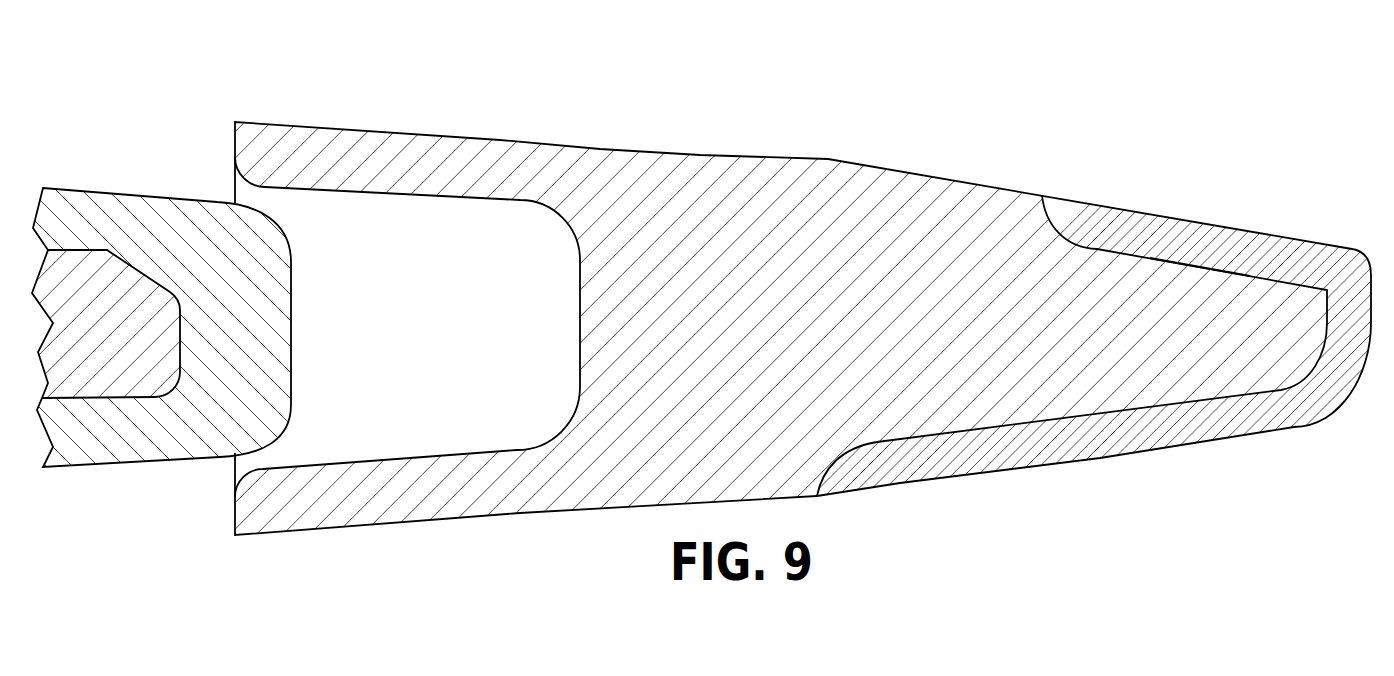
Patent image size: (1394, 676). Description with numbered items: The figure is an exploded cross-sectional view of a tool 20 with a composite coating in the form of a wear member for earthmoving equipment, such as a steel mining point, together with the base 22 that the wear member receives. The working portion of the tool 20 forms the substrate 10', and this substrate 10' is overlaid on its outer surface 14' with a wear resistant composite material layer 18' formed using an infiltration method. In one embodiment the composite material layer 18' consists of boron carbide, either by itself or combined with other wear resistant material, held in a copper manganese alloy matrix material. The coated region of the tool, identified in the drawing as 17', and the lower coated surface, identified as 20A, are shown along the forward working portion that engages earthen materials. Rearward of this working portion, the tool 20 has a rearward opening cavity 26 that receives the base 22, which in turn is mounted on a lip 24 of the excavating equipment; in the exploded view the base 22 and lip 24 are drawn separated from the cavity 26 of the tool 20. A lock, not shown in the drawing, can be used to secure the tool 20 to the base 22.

The tool 20 is at (899, 87).
The substrate 10' is at (697, 338).
The coating layer 17' is at (994, 338).
The wear resistant composite material layer 18' is at (1329, 249).
The outer surface 14' is at (1183, 278).
The coating bottom surface 20A is at (1274, 430).
The base 22 is at (223, 337).
The lip 24 is at (98, 337).
The cavity 26 is at (413, 337).